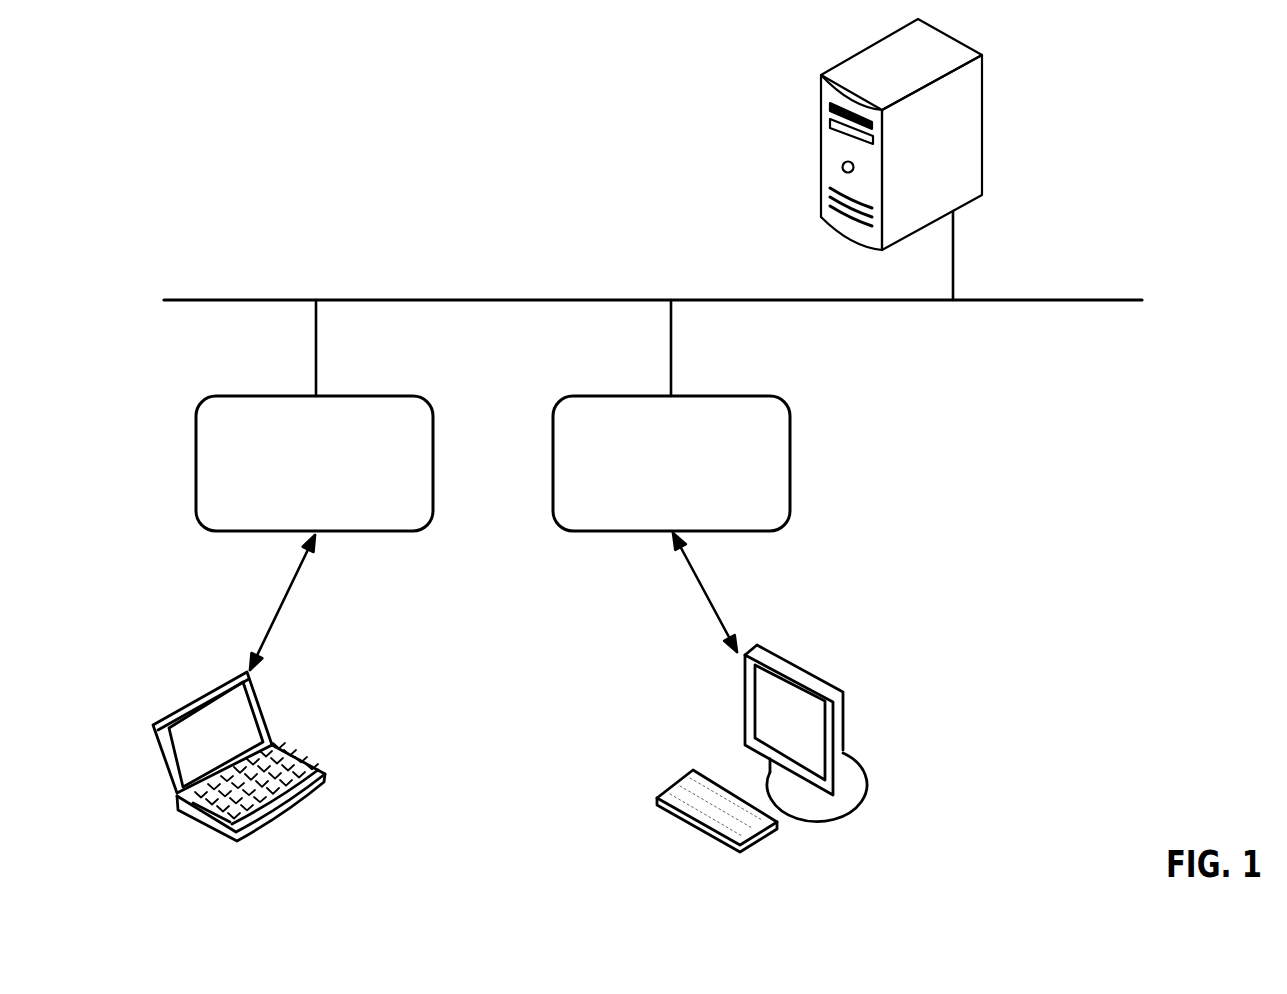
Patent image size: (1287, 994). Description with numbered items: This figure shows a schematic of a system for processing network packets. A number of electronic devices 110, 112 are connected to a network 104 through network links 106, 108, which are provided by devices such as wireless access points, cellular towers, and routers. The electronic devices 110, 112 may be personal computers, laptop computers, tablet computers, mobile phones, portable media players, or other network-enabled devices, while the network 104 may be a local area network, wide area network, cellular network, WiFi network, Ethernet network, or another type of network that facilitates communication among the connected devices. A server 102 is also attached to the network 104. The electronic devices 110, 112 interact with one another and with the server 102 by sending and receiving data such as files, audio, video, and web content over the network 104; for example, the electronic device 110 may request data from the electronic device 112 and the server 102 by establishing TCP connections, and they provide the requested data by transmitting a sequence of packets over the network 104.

The server 102 is at (944, 159).
The network 104 is at (455, 299).
The network link 106 is at (314, 415).
The network link 108 is at (671, 415).
The electronic device 110 is at (236, 721).
The electronic device 112 is at (778, 717).